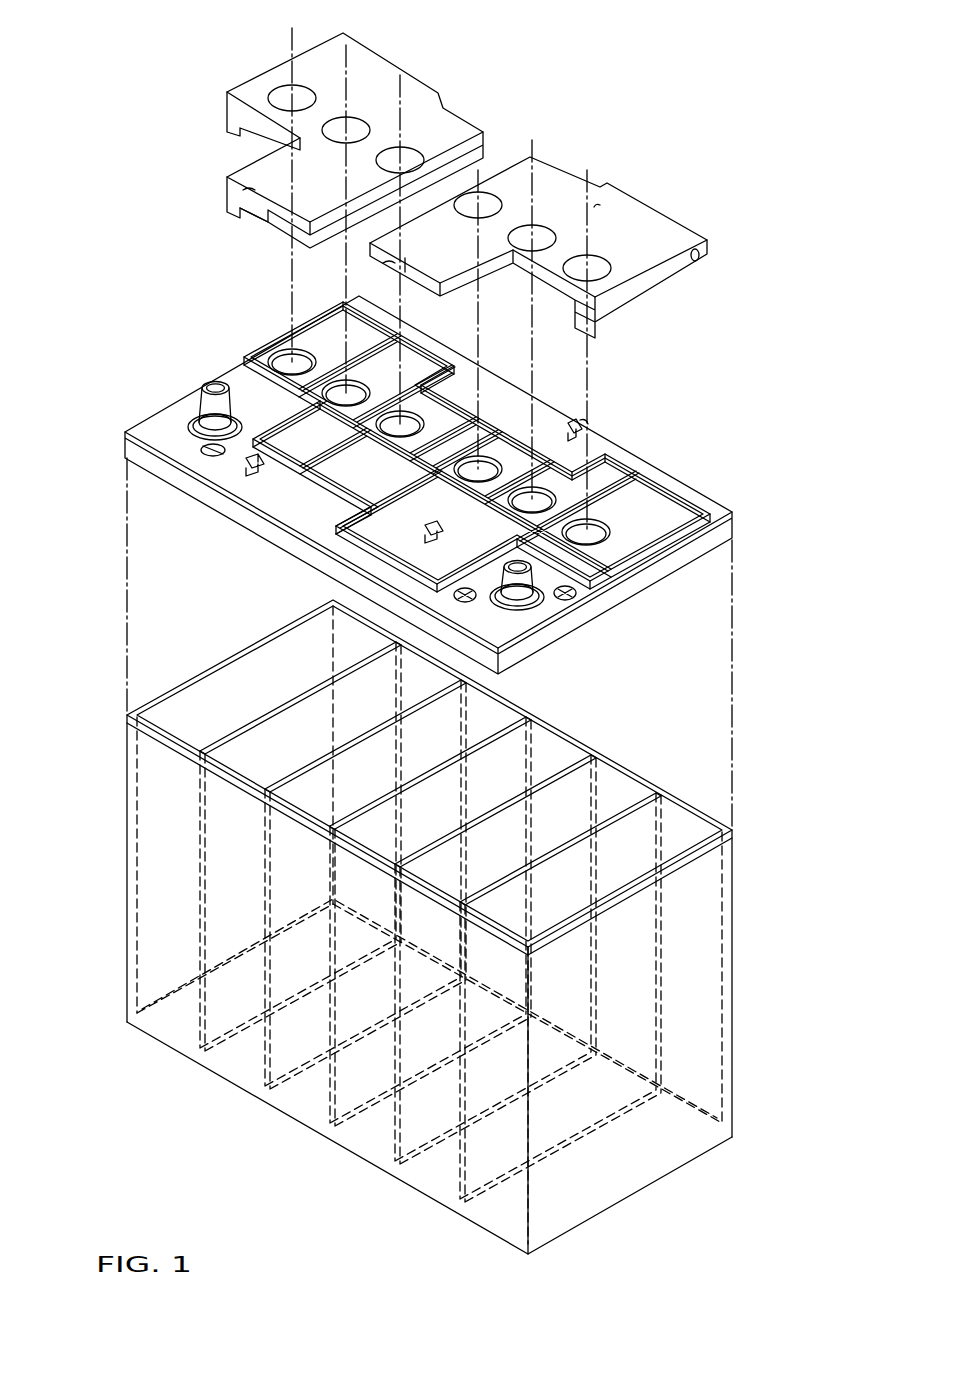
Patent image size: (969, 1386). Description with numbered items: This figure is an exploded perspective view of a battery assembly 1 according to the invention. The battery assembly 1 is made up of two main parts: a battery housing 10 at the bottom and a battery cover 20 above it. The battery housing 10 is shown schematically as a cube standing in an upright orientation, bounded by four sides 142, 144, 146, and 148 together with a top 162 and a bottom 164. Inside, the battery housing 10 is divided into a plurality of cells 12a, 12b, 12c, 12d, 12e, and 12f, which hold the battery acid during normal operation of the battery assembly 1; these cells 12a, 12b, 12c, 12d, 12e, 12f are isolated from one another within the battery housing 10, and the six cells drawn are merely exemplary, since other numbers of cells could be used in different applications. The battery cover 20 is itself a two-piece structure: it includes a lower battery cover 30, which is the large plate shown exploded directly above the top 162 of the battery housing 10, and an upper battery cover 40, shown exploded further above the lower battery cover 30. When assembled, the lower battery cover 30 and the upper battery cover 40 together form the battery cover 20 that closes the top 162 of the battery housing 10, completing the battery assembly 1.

The battery assembly 1 is at (716, 76).
The battery housing 10 is at (735, 906).
The cell 12a is at (165, 1030).
The cell 12b is at (243, 1067).
The cell 12c is at (307, 1105).
The cell 12d is at (372, 1140).
The cell 12e is at (435, 1178).
The cell 12f is at (498, 1217).
The side 142 is at (672, 1142).
The side 144 is at (150, 895).
The side 146 is at (122, 769).
The side 148 is at (692, 798).
The top 162 is at (567, 720).
The bottom 164 is at (538, 1251).
The battery cover 20 is at (103, 100).
The lower battery cover 30 is at (740, 502).
The upper battery cover 40 is at (720, 239).